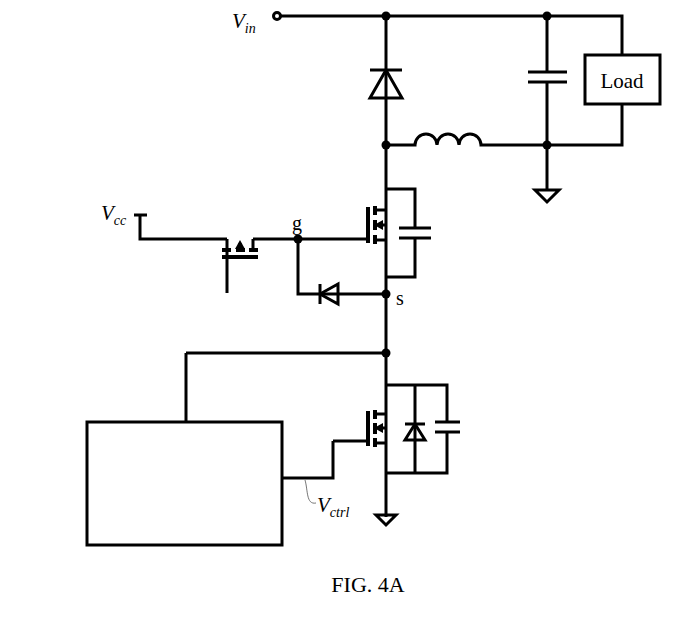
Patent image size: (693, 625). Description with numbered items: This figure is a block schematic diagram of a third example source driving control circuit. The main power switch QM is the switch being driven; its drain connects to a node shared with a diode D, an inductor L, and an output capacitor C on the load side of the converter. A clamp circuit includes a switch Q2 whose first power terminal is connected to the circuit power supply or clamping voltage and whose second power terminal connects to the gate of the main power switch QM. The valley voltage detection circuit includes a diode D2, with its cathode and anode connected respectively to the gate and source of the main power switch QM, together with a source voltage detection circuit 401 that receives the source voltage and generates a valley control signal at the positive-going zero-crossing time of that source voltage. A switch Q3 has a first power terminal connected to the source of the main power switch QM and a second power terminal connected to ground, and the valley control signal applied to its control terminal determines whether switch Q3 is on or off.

The source voltage detection circuit 401 is at (184, 483).
The main power switch QM is at (371, 207).
The switch Q2 is at (223, 250).
The switch Q3 is at (372, 410).
The diode D is at (374, 100).
The diode D2 is at (326, 306).
The inductor L is at (455, 148).
The output capacitor C is at (540, 85).